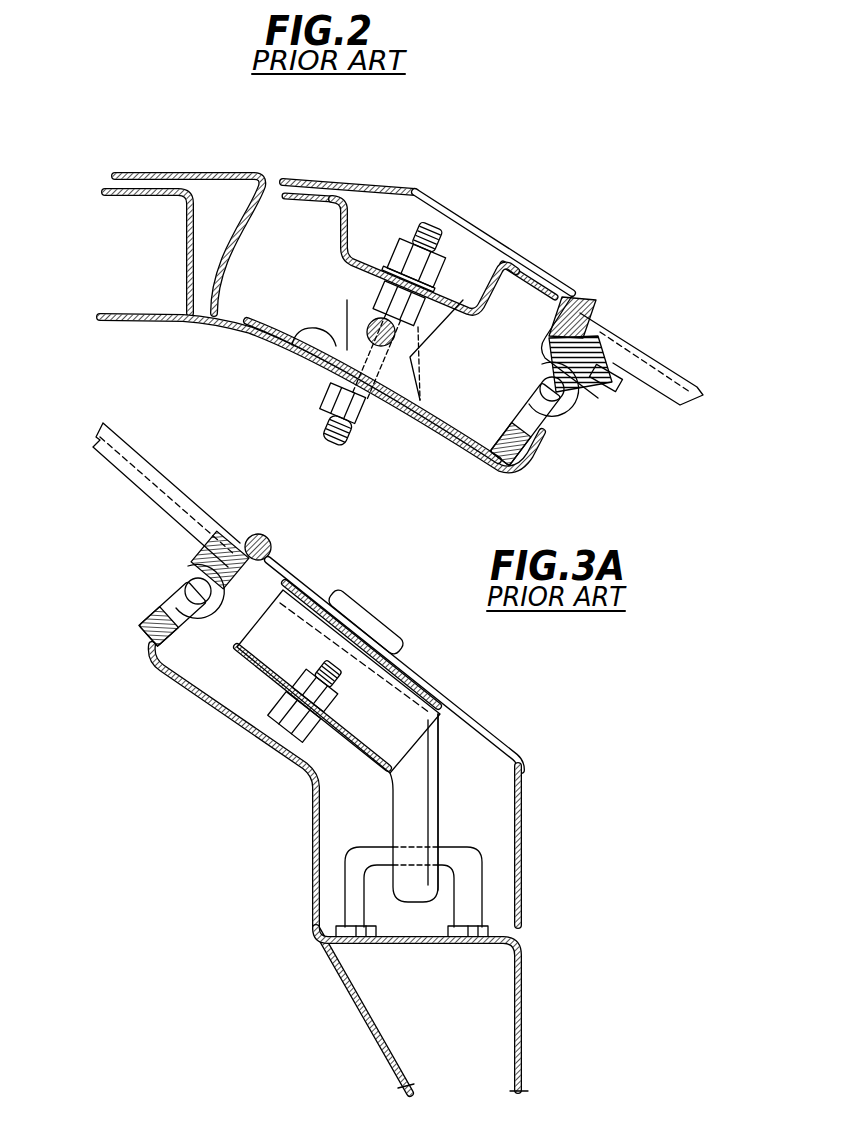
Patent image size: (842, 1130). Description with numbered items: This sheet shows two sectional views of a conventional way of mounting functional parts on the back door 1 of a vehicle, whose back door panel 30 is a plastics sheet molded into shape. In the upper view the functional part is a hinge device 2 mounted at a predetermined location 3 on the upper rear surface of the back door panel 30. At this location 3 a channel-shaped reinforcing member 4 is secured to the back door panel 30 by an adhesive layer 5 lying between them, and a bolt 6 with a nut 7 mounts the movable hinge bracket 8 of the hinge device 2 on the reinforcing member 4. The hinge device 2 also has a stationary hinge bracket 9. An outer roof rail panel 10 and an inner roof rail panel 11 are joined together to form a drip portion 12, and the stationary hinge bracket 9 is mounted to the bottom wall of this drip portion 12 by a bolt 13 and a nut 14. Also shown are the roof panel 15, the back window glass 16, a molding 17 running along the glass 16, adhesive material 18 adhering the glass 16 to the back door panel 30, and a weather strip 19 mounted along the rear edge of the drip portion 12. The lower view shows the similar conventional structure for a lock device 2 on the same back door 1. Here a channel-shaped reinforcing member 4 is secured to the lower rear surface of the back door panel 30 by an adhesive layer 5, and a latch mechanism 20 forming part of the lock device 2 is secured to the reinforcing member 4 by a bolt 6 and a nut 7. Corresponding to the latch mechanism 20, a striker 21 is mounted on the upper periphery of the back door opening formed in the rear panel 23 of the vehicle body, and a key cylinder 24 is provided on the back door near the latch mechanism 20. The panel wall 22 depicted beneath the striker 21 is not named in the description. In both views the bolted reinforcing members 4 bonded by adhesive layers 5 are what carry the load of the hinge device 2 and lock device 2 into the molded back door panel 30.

In FIG. 2, the back door 1 is at (572, 286).
In FIG. 3A, the back door 1 is at (455, 680).
In FIG. 2, the hinge device 2 is at (429, 356).
In FIG. 3A, the hinge device 2 is at (384, 810).
In FIG. 2, the predetermined location 3 is at (476, 330).
In FIG. 2, the reinforcing member 4 is at (350, 205).
In FIG. 3A, the reinforcing member 4 is at (268, 652).
In FIG. 2, the adhesive layer 5 is at (296, 180).
In FIG. 3A, the adhesive layer 5 is at (313, 597).
In FIG. 2, the bolt 6 is at (372, 285).
In FIG. 3A, the bolt 6 is at (272, 712).
In FIG. 2, the nut 7 is at (440, 268).
In FIG. 3A, the nut 7 is at (340, 732).
In FIG. 2, the movable hinge bracket 8 is at (362, 268).
In FIG. 2, the stationary hinge bracket 9 is at (290, 343).
In FIG. 2, the outer roof rail panel 10 is at (186, 260).
In FIG. 2, the inner roof rail panel 11 is at (130, 323).
In FIG. 2, the drip portion 12 is at (441, 445).
In FIG. 2, the bolt 13 is at (395, 415).
In FIG. 2, the nut 14 is at (325, 395).
In FIG. 2, the roof panel 15 is at (212, 172).
In FIG. 2, the back window glass 16 is at (660, 358).
In FIG. 3A, the back window glass 16 is at (213, 513).
In FIG. 2, the molding 17 is at (590, 297).
In FIG. 3A, the molding 17 is at (272, 540).
In FIG. 2, the adhesive material 18 is at (613, 387).
In FIG. 2, the weather strip 19 is at (570, 410).
In FIG. 3A, the weather strip 19 is at (173, 583).
In FIG. 3A, the latch mechanism 20 is at (432, 740).
In FIG. 3A, the striker 21 is at (352, 887).
In FIG. 3A, the base plate 22 is at (525, 987).
In FIG. 3A, the rear panel 23 is at (101, 666).
In FIG. 3A, the key cylinder 24 is at (380, 620).
In FIG. 2, the back door panel 30 is at (448, 203).
In FIG. 3A, the back door panel 30 is at (485, 727).